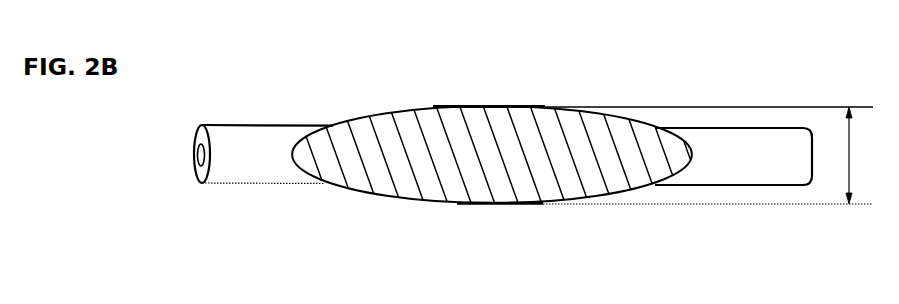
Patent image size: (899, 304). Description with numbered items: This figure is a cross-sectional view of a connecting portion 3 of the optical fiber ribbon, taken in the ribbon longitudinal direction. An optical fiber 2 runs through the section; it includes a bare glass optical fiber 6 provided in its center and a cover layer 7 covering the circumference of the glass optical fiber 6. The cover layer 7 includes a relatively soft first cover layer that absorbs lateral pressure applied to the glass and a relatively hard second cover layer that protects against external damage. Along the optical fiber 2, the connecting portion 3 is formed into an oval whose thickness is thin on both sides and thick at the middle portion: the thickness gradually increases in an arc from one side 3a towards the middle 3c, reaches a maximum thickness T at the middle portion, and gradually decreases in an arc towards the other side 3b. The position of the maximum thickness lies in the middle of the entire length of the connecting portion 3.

The optical fiber 2 is at (150, 130).
The connecting portion 3 is at (453, 203).
The one side 3a is at (294, 154).
The other side 3b is at (697, 152).
The middle 3c is at (500, 104).
The bare glass optical fiber 6 is at (197, 151).
The cover layer 7 is at (198, 183).